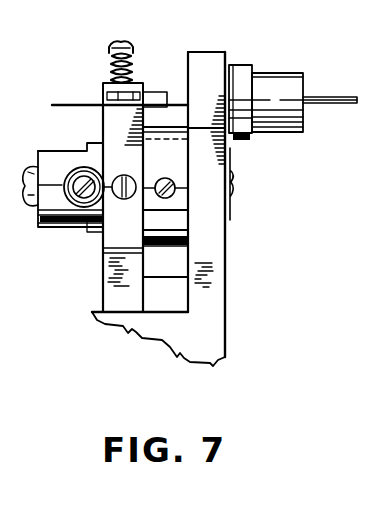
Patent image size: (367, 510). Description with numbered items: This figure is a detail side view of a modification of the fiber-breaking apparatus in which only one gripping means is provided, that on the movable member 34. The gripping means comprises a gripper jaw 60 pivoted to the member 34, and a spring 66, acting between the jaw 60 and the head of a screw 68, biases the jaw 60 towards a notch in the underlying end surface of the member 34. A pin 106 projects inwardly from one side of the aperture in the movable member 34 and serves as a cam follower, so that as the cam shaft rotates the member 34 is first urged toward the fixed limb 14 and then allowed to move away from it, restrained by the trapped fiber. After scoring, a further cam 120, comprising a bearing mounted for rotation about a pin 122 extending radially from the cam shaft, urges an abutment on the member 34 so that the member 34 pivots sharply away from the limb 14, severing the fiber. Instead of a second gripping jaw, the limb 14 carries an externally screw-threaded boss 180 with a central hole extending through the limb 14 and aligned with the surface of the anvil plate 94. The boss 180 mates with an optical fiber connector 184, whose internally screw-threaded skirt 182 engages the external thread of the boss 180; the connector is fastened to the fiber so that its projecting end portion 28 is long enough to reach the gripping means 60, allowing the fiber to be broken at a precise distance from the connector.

The limb 14 is at (207, 217).
The projecting end portion 28 is at (62, 107).
The movable member 34 is at (124, 290).
The gripper jaw 60 is at (103, 89).
The spring 66 is at (112, 66).
The screw 68 is at (110, 46).
The anvil plate 94 is at (176, 110).
The pin 106 is at (130, 197).
The further cam 120 is at (67, 206).
The pin 122 is at (86, 198).
The externally screw-threaded boss 180 is at (231, 65).
The internally screw-threaded skirt 182 is at (242, 140).
The optical fiber connector 184 is at (288, 78).